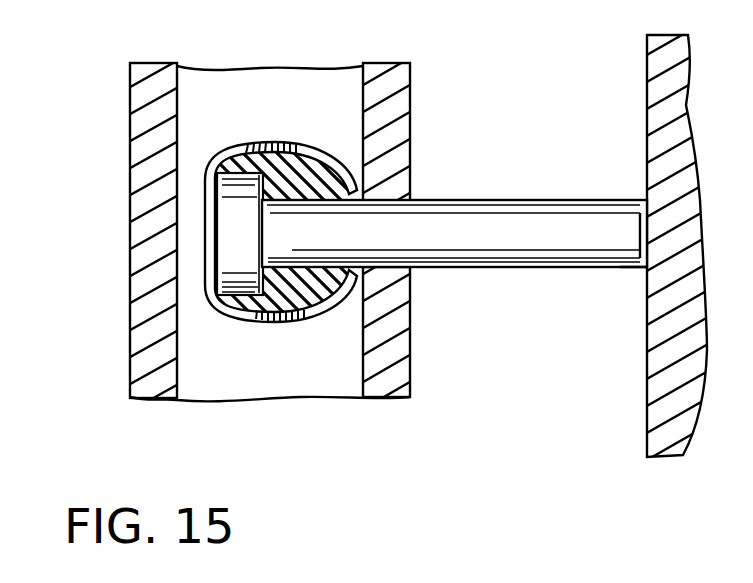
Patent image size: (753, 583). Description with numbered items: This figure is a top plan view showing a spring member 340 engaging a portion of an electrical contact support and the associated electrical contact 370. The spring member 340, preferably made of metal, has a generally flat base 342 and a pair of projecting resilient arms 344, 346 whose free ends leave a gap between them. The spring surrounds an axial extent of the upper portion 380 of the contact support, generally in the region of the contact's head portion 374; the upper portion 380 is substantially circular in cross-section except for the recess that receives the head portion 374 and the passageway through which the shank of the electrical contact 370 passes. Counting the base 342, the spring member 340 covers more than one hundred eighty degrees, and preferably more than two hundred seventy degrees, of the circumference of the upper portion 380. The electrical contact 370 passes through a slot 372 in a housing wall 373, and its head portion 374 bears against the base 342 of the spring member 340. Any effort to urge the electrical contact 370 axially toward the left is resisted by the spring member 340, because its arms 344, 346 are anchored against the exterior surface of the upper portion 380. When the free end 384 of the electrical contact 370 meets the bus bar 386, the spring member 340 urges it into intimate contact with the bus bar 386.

The spring member 340 is at (262, 242).
The base 342 is at (204, 252).
The resilient arm 344 is at (263, 141).
The resilient arm 346 is at (238, 318).
The electrical contact 370 is at (520, 199).
The slot 372 is at (410, 268).
The housing wall 373 is at (410, 128).
The head portion 374 is at (232, 216).
The upper portion 380 is at (287, 292).
The free end 384 is at (645, 268).
The bus bar 386 is at (647, 432).